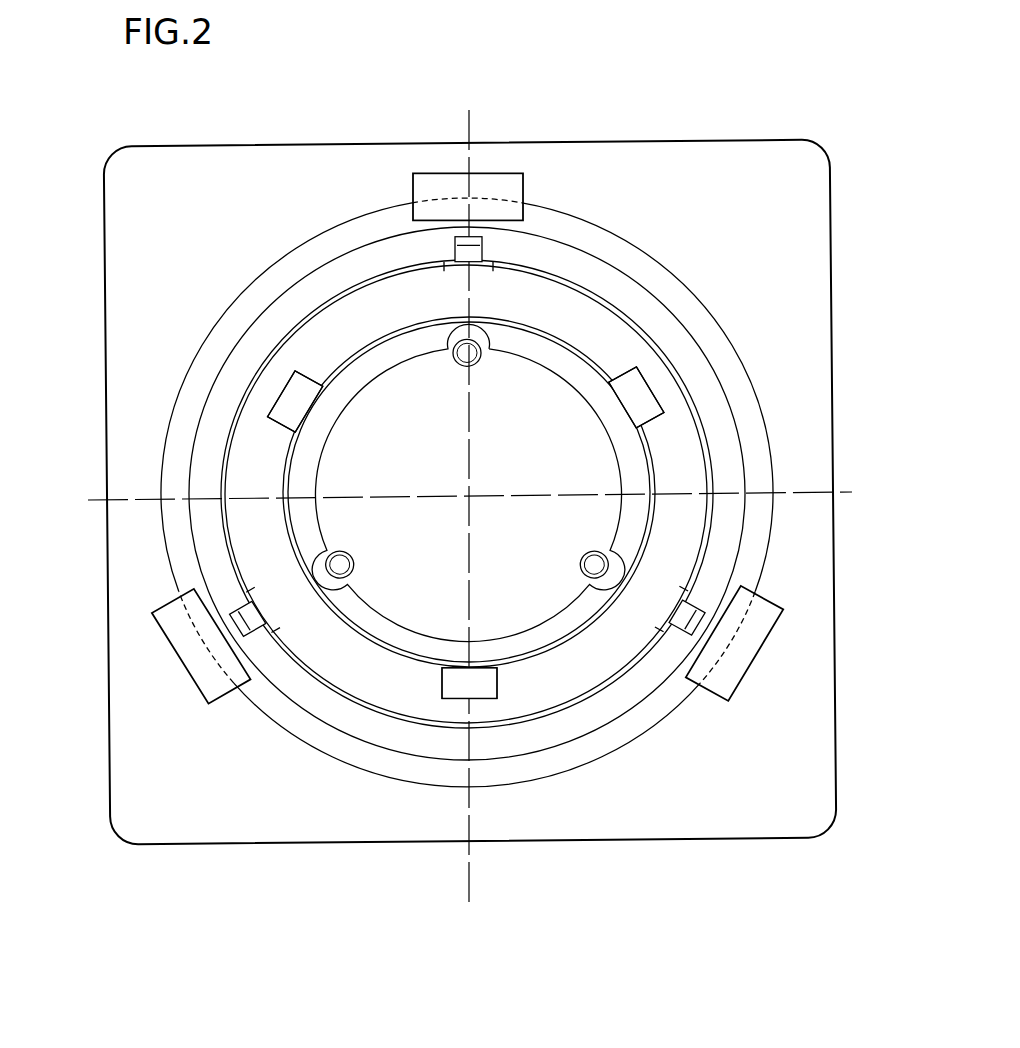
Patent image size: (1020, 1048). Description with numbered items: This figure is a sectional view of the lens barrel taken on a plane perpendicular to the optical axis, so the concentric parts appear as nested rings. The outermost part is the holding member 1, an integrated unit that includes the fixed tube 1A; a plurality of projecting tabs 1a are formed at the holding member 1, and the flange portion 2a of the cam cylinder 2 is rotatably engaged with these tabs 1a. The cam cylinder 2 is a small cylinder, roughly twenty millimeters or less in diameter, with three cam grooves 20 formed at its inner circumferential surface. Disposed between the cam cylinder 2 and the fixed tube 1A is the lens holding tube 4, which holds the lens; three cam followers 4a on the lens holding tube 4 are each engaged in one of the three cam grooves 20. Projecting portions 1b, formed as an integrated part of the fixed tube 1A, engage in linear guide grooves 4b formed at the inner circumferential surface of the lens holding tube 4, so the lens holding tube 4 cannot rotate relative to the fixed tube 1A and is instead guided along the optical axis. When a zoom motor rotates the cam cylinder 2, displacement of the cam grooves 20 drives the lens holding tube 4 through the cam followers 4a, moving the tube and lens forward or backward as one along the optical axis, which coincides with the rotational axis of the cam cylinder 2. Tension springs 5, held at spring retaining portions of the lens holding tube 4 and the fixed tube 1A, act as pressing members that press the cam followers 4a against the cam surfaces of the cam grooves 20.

The holding member 1 is at (700, 140).
The projecting tabs 1a is at (437, 188).
The projecting portions 1b is at (288, 398).
The fixed tube 1A is at (300, 470).
The cam cylinder 2 is at (527, 743).
The flange portion 2a is at (622, 748).
The lens holding tube 4 is at (700, 447).
The cam followers 4a is at (455, 250).
The linear guide grooves 4b is at (292, 412).
The tension springs 5 is at (478, 365).
The cam grooves 20 is at (483, 240).